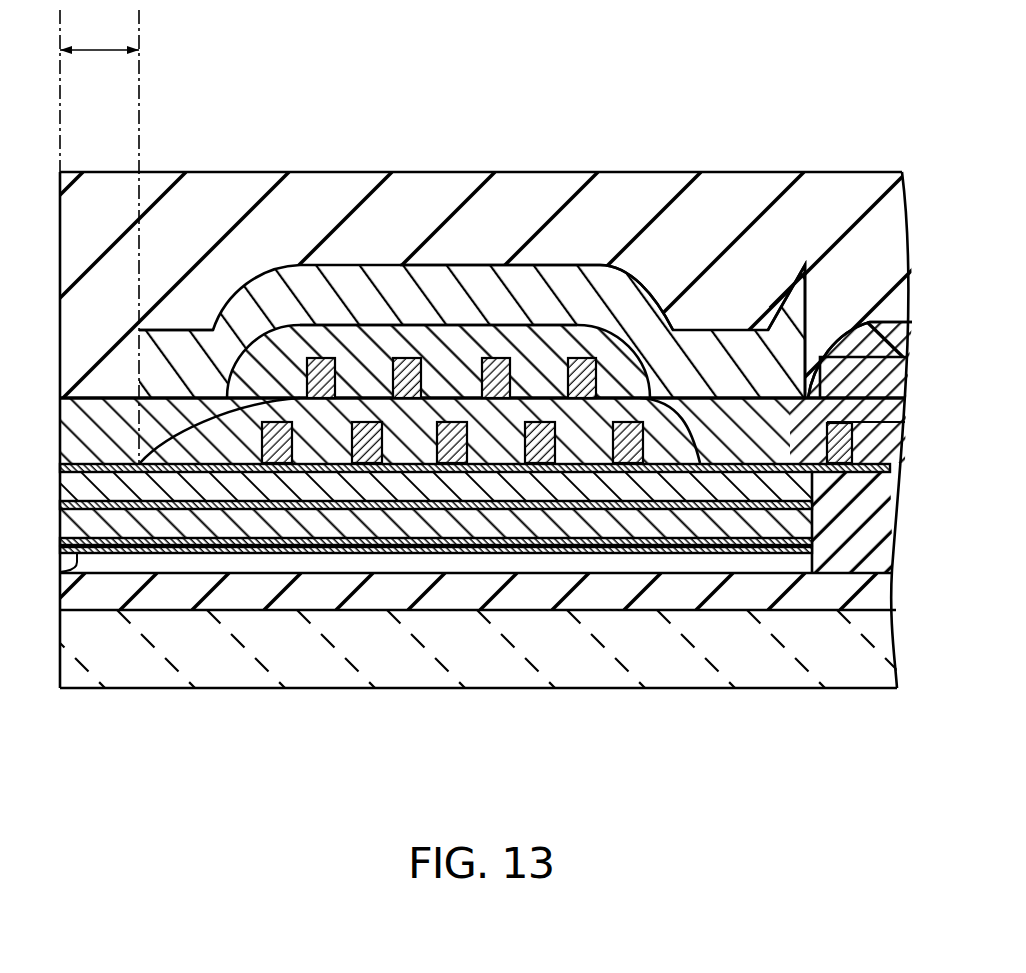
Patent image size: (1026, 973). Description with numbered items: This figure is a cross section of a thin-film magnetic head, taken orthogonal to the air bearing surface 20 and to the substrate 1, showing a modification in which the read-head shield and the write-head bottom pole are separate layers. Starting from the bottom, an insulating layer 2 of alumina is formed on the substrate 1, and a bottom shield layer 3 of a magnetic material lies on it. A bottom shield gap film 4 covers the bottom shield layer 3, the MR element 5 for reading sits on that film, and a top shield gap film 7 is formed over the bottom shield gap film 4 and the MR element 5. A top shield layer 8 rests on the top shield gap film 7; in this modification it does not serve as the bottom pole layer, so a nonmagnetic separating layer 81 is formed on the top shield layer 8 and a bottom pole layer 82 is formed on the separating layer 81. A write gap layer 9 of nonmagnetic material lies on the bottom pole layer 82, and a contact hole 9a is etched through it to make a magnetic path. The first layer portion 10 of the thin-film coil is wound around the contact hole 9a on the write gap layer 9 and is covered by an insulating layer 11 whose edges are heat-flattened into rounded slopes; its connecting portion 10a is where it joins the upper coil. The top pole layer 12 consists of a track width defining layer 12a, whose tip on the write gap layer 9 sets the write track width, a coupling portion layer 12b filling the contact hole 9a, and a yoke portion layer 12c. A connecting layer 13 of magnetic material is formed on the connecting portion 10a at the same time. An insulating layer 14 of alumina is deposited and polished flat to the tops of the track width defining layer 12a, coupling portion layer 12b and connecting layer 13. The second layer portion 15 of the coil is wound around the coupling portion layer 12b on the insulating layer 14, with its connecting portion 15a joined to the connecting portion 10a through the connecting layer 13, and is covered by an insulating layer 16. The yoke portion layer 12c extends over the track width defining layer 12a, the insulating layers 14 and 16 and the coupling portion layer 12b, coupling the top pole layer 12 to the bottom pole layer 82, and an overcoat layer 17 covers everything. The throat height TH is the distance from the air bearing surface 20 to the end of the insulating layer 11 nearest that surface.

The substrate 1 is at (580, 675).
The insulating layer 2 is at (607, 600).
The bottom shield layer 3 is at (657, 563).
The bottom shield gap film 4 is at (122, 553).
The MR element 5 is at (58, 577).
The top shield gap film 7 is at (145, 543).
The top shield layer 8 is at (182, 525).
The separating layer 81 is at (237, 505).
The bottom pole layer 82 is at (283, 483).
The write gap layer 9 is at (317, 473).
The contact hole 9a is at (715, 458).
The first layer portion of the thin-film coil 10 is at (415, 410).
The connecting portion 10a is at (868, 450).
The insulating layer 11 is at (500, 470).
The top pole layer 12 is at (306, 258).
The track width defining layer 12a is at (97, 447).
The coupling portion layer 12b is at (737, 455).
The yoke portion layer 12c is at (527, 277).
The connecting layer 13 is at (818, 515).
The insulating layer 14 is at (786, 410).
The second layer portion of the thin-film coil 15 is at (384, 340).
The connecting portion 15a is at (870, 310).
The insulating layer 16 is at (448, 330).
The overcoat layer 17 is at (240, 195).
The air bearing surface 20 is at (57, 522).
The throat height TH is at (99, 234).